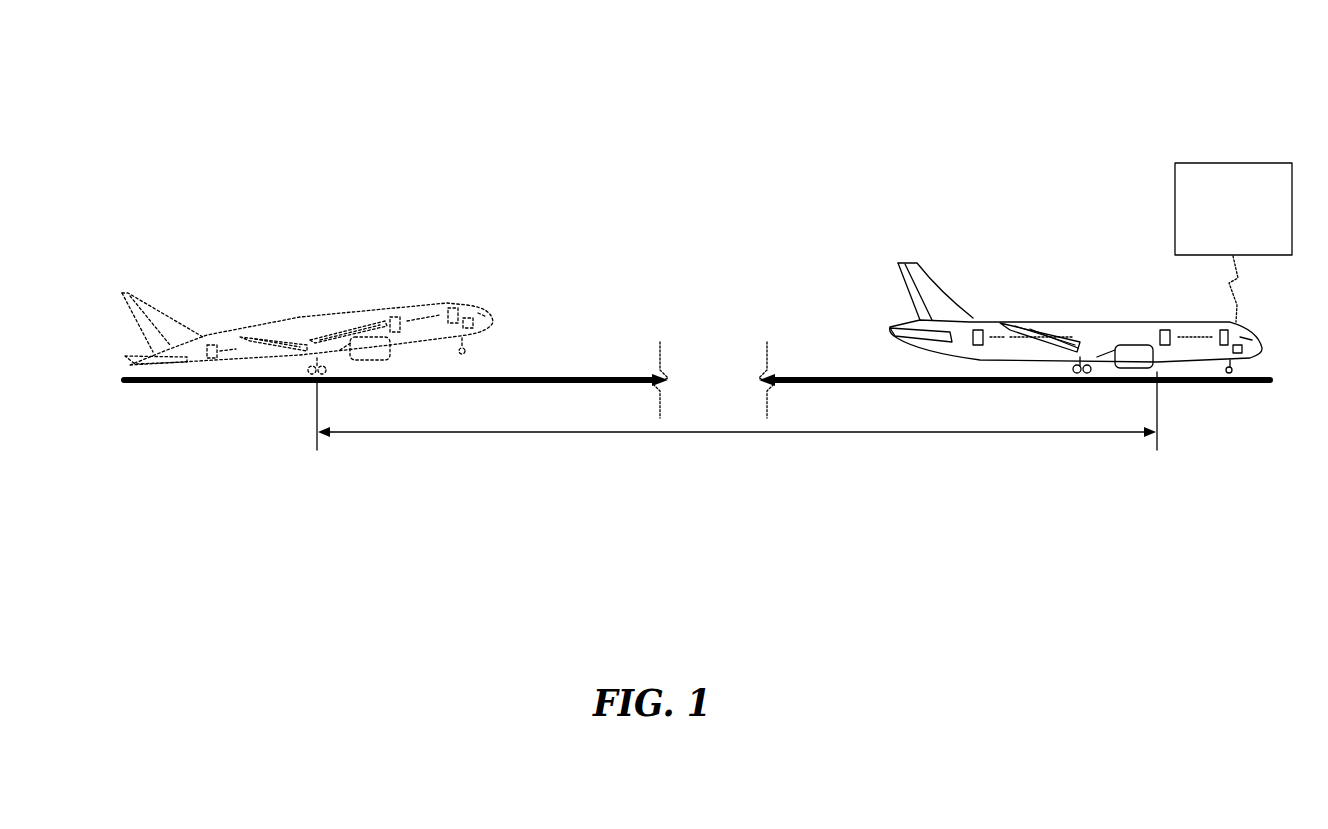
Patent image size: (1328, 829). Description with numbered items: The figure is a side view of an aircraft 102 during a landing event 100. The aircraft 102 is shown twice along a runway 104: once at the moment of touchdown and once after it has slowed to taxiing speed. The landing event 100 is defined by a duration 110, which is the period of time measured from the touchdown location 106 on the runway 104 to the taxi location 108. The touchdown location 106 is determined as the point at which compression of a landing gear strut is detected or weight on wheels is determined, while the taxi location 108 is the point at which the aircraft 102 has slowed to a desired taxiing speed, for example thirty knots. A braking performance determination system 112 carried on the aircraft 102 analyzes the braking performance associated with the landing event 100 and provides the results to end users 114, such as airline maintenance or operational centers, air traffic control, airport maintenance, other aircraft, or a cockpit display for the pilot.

The landing event 100 is at (1122, 92).
The aircraft 102 is at (447, 303).
The runway 104 is at (132, 384).
The touchdown location 106 is at (309, 392).
The taxi location 108 is at (1166, 392).
The duration 110 is at (737, 460).
The braking performance determination system 112 is at (1238, 345).
The end users 114 is at (1233, 242).